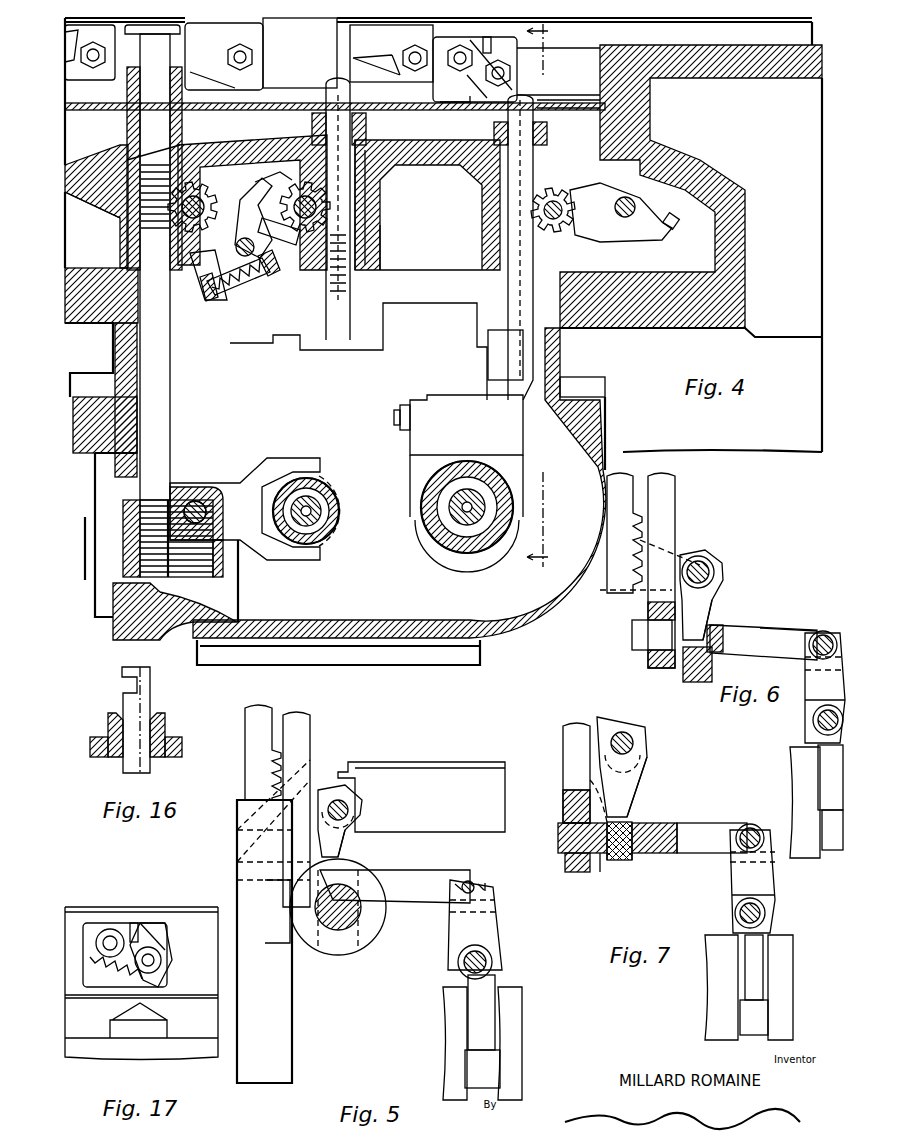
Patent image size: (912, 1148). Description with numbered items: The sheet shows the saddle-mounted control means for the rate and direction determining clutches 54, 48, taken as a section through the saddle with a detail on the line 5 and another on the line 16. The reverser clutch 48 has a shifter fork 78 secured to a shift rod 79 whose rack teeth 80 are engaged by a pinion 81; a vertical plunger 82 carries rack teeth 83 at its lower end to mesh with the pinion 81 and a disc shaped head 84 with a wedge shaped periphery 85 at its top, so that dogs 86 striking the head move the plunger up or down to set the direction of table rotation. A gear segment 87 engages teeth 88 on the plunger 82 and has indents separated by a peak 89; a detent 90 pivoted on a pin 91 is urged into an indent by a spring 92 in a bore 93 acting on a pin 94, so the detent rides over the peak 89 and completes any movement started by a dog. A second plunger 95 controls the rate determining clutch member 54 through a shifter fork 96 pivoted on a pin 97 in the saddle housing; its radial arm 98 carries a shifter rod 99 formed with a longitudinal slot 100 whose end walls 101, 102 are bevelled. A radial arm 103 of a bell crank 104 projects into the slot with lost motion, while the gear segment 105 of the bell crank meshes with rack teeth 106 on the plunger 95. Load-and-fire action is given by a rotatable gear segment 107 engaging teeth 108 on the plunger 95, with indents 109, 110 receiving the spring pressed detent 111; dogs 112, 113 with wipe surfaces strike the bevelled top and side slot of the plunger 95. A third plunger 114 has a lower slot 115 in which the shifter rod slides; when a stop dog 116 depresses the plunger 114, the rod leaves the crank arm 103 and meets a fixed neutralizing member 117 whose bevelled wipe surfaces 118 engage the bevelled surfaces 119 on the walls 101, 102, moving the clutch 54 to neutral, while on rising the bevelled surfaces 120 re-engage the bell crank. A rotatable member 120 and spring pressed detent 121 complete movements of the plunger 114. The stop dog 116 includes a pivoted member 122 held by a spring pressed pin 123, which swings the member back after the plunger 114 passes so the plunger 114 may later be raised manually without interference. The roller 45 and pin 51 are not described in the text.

In FIG. 4, the section line 5— 5 is at (544, 295).
In FIG. 4, the section line 16— 16 is at (321, 79).
In FIG. 4, the pin 45 is at (300, 530).
In FIG. 4, the reverser clutch 48 is at (339, 490).
In FIG. 4, the pin 51 is at (452, 530).
In FIG. 4, the rate determining clutch member 54 is at (428, 533).
In FIG. 6, the rate determining clutch member 54 is at (802, 850).
In FIG. 7, the rate determining clutch member 54 is at (712, 1028).
In FIG. 5, the rate determining clutch member 54 is at (452, 1070).
In FIG. 4, the shifter fork 78 is at (238, 470).
In FIG. 4, the shift rod 79 is at (195, 500).
In FIG. 4, the rack teeth 80 is at (205, 492).
In FIG. 4, the pinion 81 is at (196, 572).
In FIG. 4, the vertical plunger 82 is at (158, 58).
In FIG. 4, the rack teeth 83 is at (158, 572).
In FIG. 4, the disc shaped head 84 is at (179, 29).
In FIG. 4, the wedge shaped periphery 85 is at (105, 80).
In FIG. 4, the dogs 86 is at (73, 80).
In FIG. 4, the gear segment 87 is at (205, 148).
In FIG. 4, the teeth 88 is at (118, 228).
In FIG. 4, the peak 89 is at (232, 205).
In FIG. 4, the detent 90 is at (255, 178).
In FIG. 4, the pin 91 is at (198, 292).
In FIG. 4, the spring 92 is at (232, 298).
In FIG. 4, the bore 93 is at (207, 300).
In FIG. 4, the pin 94 is at (270, 280).
In FIG. 4, the second plunger 95 is at (355, 190).
In FIG. 16, the second plunger 95 is at (145, 713).
In FIG. 4, the shifter fork 96 is at (448, 405).
In FIG. 6, the shifter fork 96 is at (830, 774).
In FIG. 7, the shifter fork 96 is at (748, 970).
In FIG. 5, the shifter fork 96 is at (480, 1025).
In FIG. 4, the pin 97 is at (394, 418).
In FIG. 6, the pin 97 is at (813, 722).
In FIG. 7, the pin 97 is at (735, 914).
In FIG. 5, the pin 97 is at (493, 958).
In FIG. 4, the radial arm 98 is at (487, 368).
In FIG. 6, the radial arm 98 is at (806, 700).
In FIG. 7, the radial arm 98 is at (733, 878).
In FIG. 5, the radial arm 98 is at (488, 918).
In FIG. 6, the shifter rod 99 is at (798, 628).
In FIG. 7, the shifter rod 99 is at (712, 825).
In FIG. 5, the shifter rod 99 is at (425, 870).
In FIG. 6, the longitudinal slot 100 is at (715, 632).
In FIG. 6, the end wall 101 is at (642, 635).
In FIG. 7, the end wall 101 is at (560, 840).
In FIG. 6, the end wall 102 is at (775, 627).
In FIG. 7, the end wall 102 is at (660, 823).
In FIG. 6, the radial arm 103 is at (712, 598).
In FIG. 7, the radial arm 103 is at (640, 790).
In FIG. 5, the radial arm 103 is at (345, 850).
In FIG. 6, the bell crank 104 is at (690, 552).
In FIG. 7, the bell crank 104 is at (612, 722).
In FIG. 6, the gear segment 105 is at (640, 590).
In FIG. 5, the gear segment 105 is at (316, 790).
In FIG. 6, the rack teeth 106 is at (618, 575).
In FIG. 5, the rack teeth 106 is at (252, 733).
In FIG. 4, the rotatable gear segment 107 is at (380, 200).
In FIG. 4, the teeth 108 is at (380, 222).
In FIG. 4, the indent 109 is at (270, 232).
In FIG. 4, the indent 110 is at (262, 178).
In FIG. 4, the detent member 111 is at (285, 190).
In FIG. 4, the dog 112 is at (222, 44).
In FIG. 4, the dog 113 is at (350, 42).
In FIG. 4, the third plunger 114 is at (528, 128).
In FIG. 6, the third plunger 114 is at (668, 508).
In FIG. 7, the third plunger 114 is at (572, 748).
In FIG. 5, the third plunger 114 is at (303, 735).
In FIG. 17, the third plunger 114 is at (150, 1005).
In FIG. 7, the longitudinal slot 115 is at (565, 800).
In FIG. 4, the stop dog 116 is at (440, 88).
In FIG. 17, the stop dog 116 is at (92, 925).
In FIG. 7, the fixed neutralizing member 117 is at (632, 860).
In FIG. 7, the bevelled wipe surfaces 118 is at (600, 790).
In FIG. 7, the bevelled surfaces 119 is at (635, 855).
In FIG. 4, the bevelled surfaces / rotatable member 120 is at (572, 200).
In FIG. 7, the bevelled surfaces / rotatable member 120 is at (632, 825).
In FIG. 4, the spring pressed detent 121 is at (648, 242).
In FIG. 4, the pivoted member 122 is at (552, 52).
In FIG. 17, the pivoted member 122 is at (158, 925).
In FIG. 4, the spring pressed pin 123 is at (472, 102).